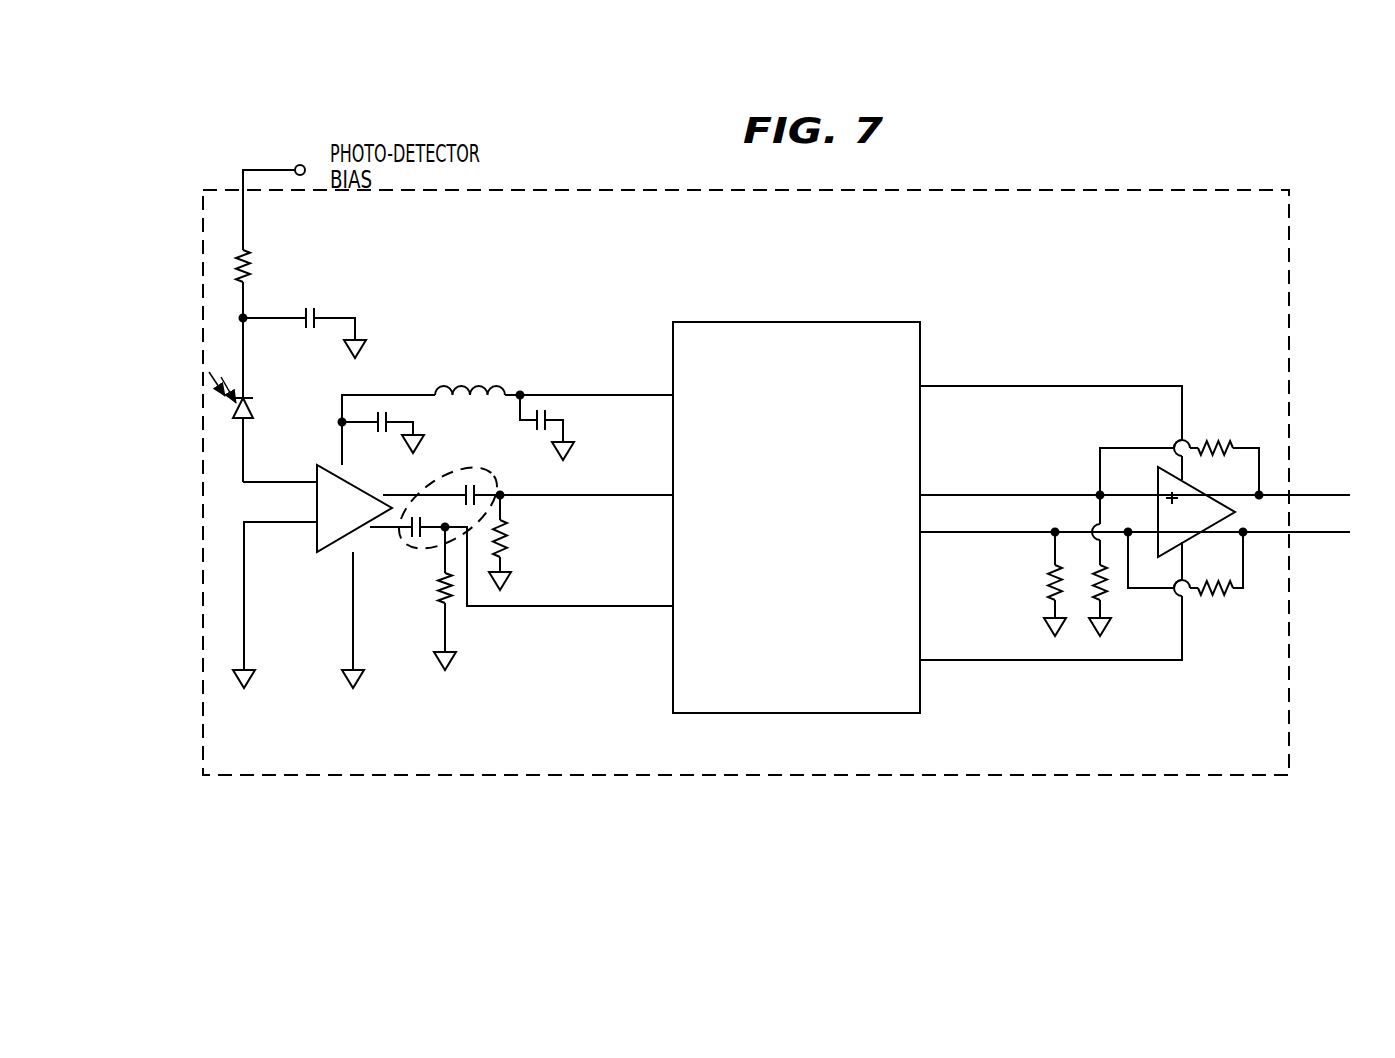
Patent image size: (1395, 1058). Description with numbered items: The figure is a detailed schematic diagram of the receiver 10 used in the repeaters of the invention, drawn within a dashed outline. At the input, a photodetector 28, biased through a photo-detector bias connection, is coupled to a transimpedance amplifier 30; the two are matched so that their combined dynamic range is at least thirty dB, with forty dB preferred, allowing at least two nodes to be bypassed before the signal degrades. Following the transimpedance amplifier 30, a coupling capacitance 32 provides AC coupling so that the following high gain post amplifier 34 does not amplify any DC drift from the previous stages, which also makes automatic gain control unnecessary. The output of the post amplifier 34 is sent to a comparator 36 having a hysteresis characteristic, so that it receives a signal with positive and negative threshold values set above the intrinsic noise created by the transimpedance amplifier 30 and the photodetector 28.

The receiver 10 is at (644, 186).
The photodetector 28 is at (227, 429).
The transimpedance amplifier 30 is at (328, 553).
The coupling capacitance 32 is at (407, 557).
The post amplifier 34 is at (837, 320).
The comparator 36 is at (1199, 504).